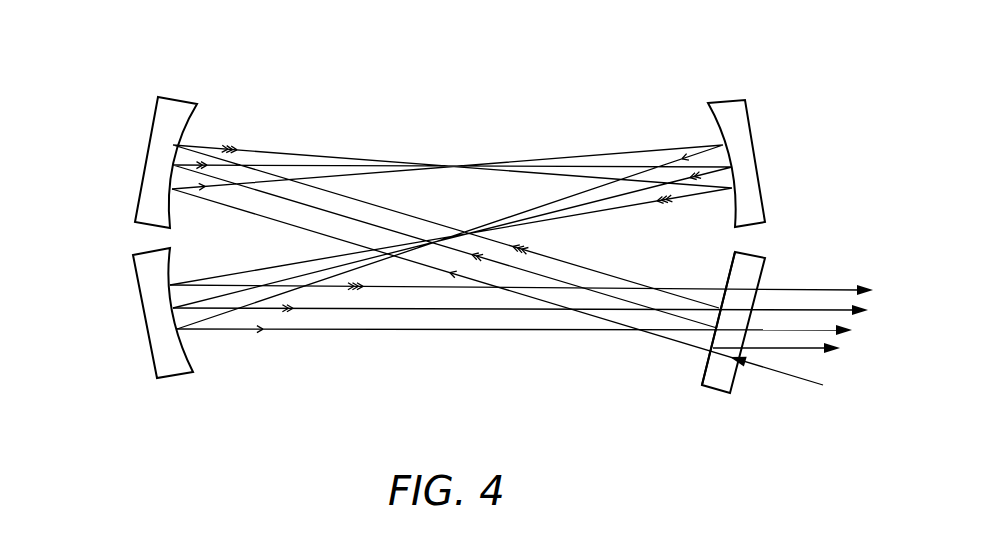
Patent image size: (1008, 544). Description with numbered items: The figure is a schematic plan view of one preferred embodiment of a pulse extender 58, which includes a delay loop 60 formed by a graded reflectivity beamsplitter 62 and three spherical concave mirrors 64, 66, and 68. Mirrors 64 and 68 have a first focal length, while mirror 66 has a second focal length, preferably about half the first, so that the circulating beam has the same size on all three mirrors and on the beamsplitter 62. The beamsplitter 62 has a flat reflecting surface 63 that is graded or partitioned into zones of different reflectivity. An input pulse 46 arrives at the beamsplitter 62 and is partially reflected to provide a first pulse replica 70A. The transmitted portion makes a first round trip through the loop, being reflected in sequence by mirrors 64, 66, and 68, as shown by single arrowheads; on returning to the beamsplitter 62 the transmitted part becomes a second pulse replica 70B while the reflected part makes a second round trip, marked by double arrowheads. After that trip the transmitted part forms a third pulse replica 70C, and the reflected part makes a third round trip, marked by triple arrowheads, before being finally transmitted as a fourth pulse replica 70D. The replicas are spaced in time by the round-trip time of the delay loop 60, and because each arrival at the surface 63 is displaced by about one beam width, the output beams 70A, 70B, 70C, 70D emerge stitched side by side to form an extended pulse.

The input pulse 46 is at (770, 350).
The pulse extender 58 is at (451, 307).
The delay loop 60 is at (443, 146).
The graded reflectivity beamsplitter 62 is at (715, 398).
The reflecting surface 63 is at (730, 272).
The spherical mirror 64 is at (160, 132).
The spherical mirror 66 is at (745, 128).
The spherical mirror 68 is at (160, 358).
The first pulse replica 70A is at (775, 348).
The second pulse replica 70B is at (757, 330).
The third pulse replica 70C is at (797, 310).
The fourth pulse replica 70D is at (823, 290).